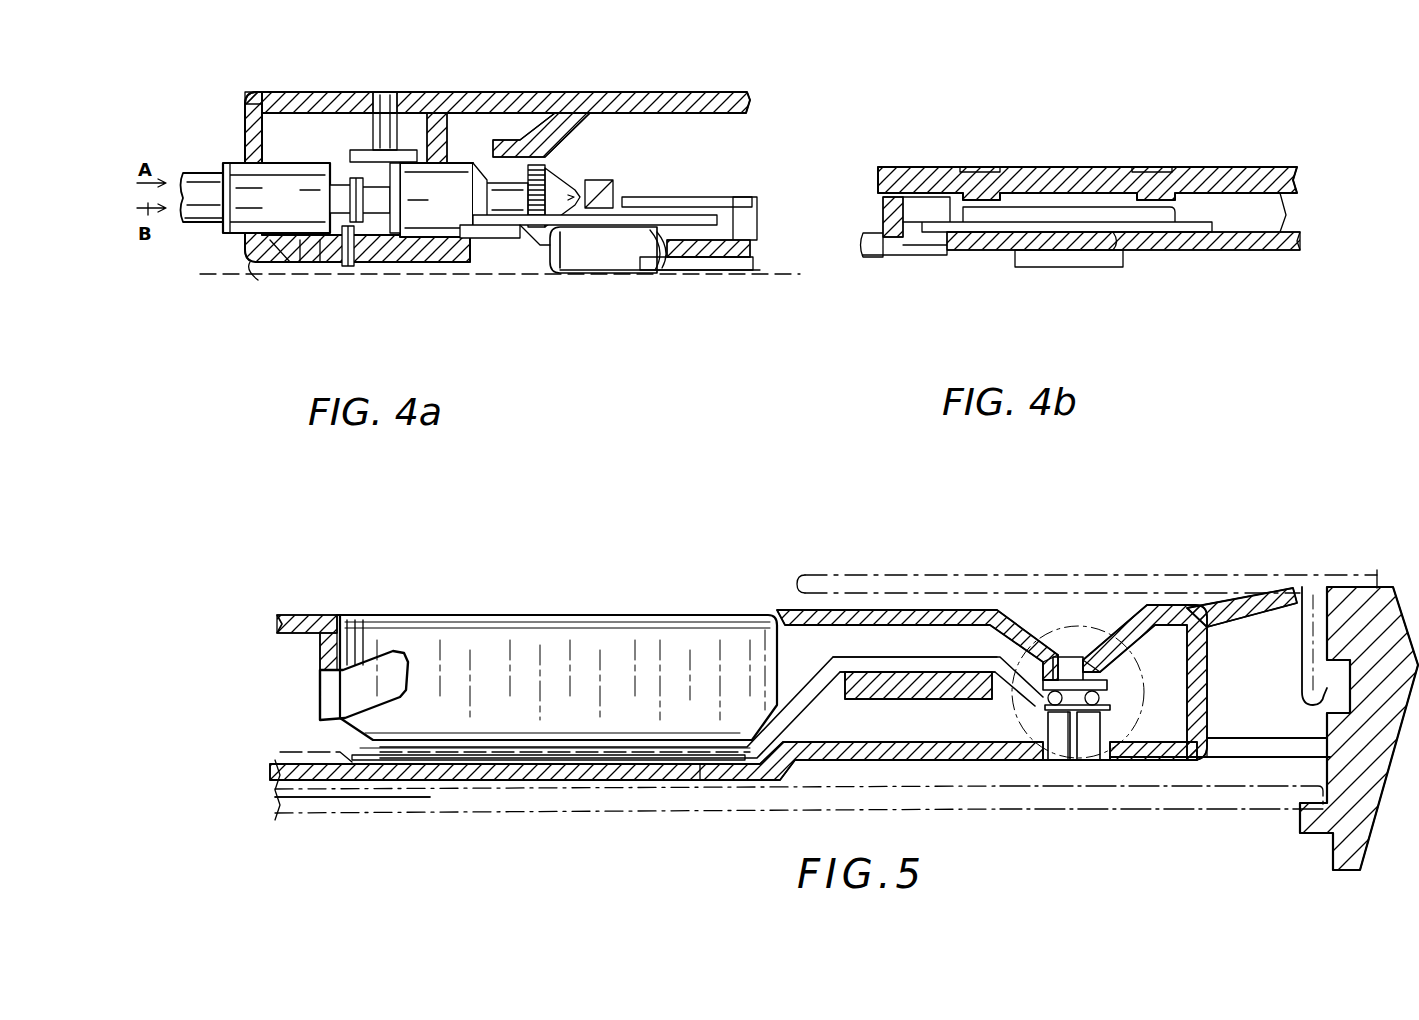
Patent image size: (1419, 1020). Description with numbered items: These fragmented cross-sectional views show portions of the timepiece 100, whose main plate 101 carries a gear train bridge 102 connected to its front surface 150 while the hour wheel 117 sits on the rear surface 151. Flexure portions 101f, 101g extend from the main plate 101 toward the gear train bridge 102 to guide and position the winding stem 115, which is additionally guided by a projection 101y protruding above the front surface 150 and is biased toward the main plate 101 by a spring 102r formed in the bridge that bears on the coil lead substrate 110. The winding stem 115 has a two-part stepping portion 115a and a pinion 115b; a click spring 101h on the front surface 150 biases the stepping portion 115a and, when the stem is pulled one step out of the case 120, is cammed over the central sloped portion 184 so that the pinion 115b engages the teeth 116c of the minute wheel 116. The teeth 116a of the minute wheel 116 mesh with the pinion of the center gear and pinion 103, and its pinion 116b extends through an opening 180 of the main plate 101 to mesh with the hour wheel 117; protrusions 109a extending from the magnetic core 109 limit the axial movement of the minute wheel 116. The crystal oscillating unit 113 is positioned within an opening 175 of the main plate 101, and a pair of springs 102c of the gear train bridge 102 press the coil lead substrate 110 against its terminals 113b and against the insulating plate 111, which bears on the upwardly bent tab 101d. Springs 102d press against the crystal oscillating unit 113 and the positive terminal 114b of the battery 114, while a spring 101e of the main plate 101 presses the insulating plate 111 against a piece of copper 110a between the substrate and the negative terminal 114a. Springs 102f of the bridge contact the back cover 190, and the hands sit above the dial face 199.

In FIG. 4A, the timepiece 100 is at (221, 324).
In FIG. 5, the timepiece 100 is at (271, 840).
In FIG. 4A, the main plate 101 is at (404, 266).
In FIG. 4B, the main plate 101 is at (1213, 252).
In FIG. 5, the main plate 101 is at (737, 766).
In FIG. 5, the upwardly bent tab 101d is at (1048, 728).
In FIG. 5, the spring 101e is at (637, 770).
In FIG. 4A, the flexure portion 101f is at (257, 94).
In FIG. 5, the flexure portion 101f is at (1237, 760).
In FIG. 4A, the flexure portion 101g is at (485, 103).
In FIG. 4A, the click spring 101h is at (343, 266).
In FIG. 4A, the projection 101y is at (258, 281).
In FIG. 4A, the gear train bridge 102 is at (641, 92).
In FIG. 5, the gear train bridge 102 is at (795, 620).
In FIG. 5, the springs 102c is at (1040, 625).
In FIG. 5, the springs 102d is at (370, 665).
In FIG. 5, the springs 102f is at (1250, 597).
In FIG. 4A, the spring 102r is at (417, 90).
In FIG. 4A, the center gear and pinion 103 is at (742, 205).
In FIG. 4B, the magnetic core 109 is at (1240, 162).
In FIG. 5, the magnetic core 109 is at (888, 703).
In FIG. 4B, the protrusions 109a is at (985, 183).
In FIG. 4A, the coil lead substrate 110 is at (383, 152).
In FIG. 5, the coil lead substrate 110 is at (903, 657).
In FIG. 5, the piece of copper 110a is at (500, 776).
In FIG. 5, the insulating plate 111 is at (812, 700).
In FIG. 5, the crystal oscillating unit 113 is at (1130, 727).
In FIG. 5, the terminals 113b is at (1070, 758).
In FIG. 5, the battery 114 is at (628, 612).
In FIG. 5, the negative terminal 114a is at (470, 758).
In FIG. 5, the positive terminal 114b is at (407, 633).
In FIG. 4A, the winding stem 115 is at (287, 186).
In FIG. 4A, the stepping portion 115a is at (345, 186).
In FIG. 4A, the pinion 115b is at (546, 171).
In FIG. 4A, the minute wheel 116 is at (599, 262).
In FIG. 4B, the minute wheel 116 is at (1057, 255).
In FIG. 4A, the teeth 116a is at (472, 240).
In FIG. 4A, the pinion 116b is at (557, 250).
In FIG. 4A, the teeth 116c is at (701, 198).
In FIG. 4A, the hour wheel 117 is at (756, 271).
In FIG. 5, the case 120 is at (1325, 726).
In FIG. 4A, the front surface 150 is at (303, 265).
In FIG. 4A, the rear surface 151 is at (698, 271).
In FIG. 5, the opening 175 is at (1040, 752).
In FIG. 4A, the opening 180 is at (656, 272).
In FIG. 4B, the opening 180 is at (1115, 244).
In FIG. 4A, the central sloped portion 184 is at (377, 268).
In FIG. 5, the back cover 190 is at (1135, 580).
In FIG. 5, the dial face 199 is at (338, 815).